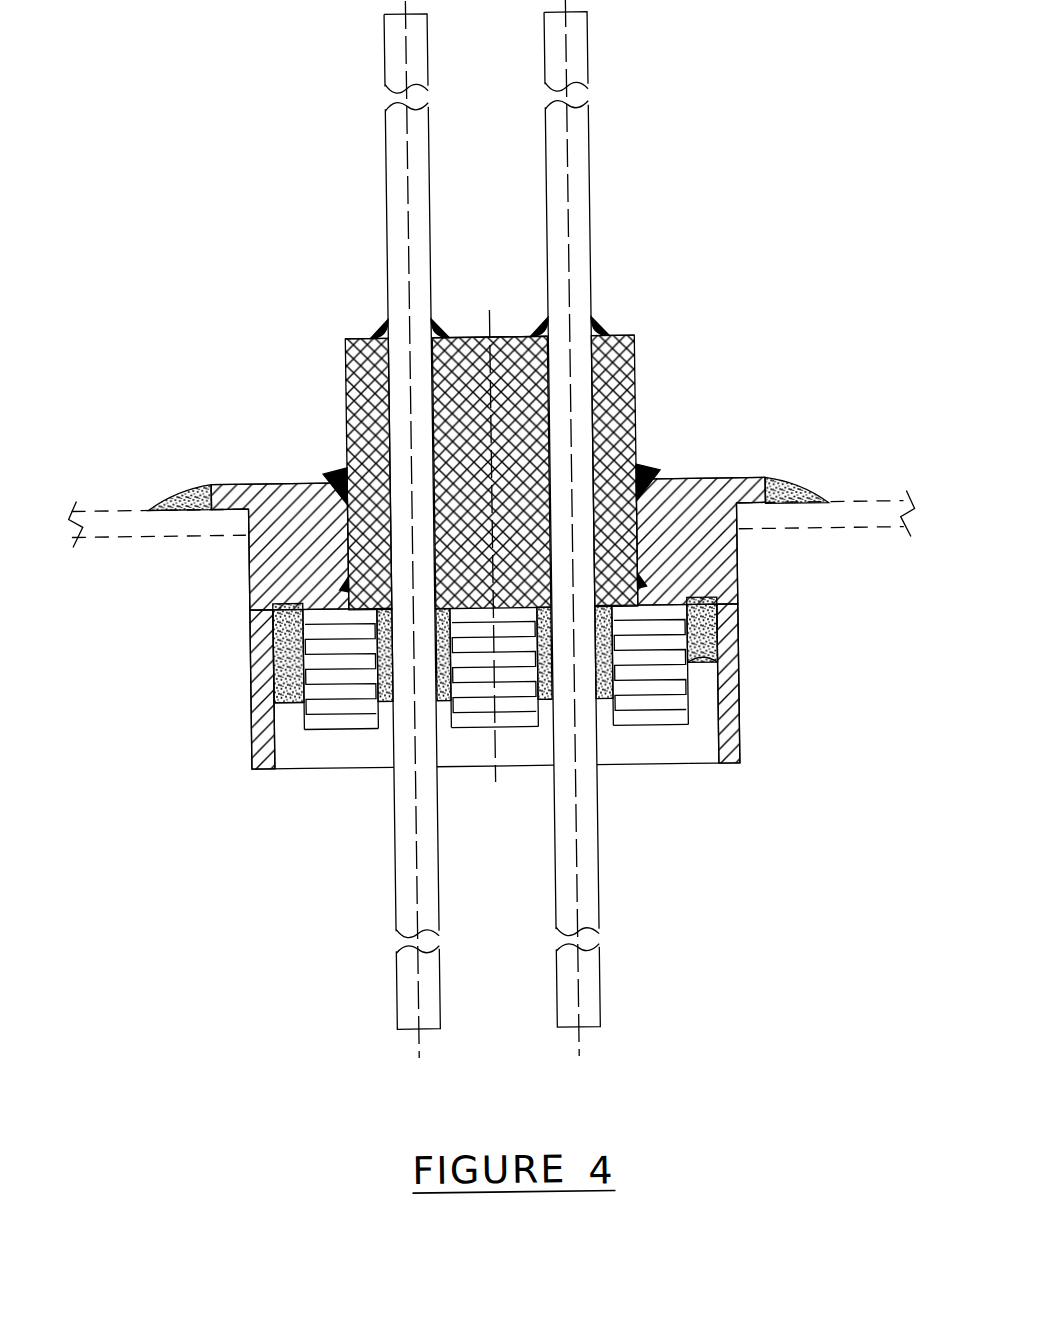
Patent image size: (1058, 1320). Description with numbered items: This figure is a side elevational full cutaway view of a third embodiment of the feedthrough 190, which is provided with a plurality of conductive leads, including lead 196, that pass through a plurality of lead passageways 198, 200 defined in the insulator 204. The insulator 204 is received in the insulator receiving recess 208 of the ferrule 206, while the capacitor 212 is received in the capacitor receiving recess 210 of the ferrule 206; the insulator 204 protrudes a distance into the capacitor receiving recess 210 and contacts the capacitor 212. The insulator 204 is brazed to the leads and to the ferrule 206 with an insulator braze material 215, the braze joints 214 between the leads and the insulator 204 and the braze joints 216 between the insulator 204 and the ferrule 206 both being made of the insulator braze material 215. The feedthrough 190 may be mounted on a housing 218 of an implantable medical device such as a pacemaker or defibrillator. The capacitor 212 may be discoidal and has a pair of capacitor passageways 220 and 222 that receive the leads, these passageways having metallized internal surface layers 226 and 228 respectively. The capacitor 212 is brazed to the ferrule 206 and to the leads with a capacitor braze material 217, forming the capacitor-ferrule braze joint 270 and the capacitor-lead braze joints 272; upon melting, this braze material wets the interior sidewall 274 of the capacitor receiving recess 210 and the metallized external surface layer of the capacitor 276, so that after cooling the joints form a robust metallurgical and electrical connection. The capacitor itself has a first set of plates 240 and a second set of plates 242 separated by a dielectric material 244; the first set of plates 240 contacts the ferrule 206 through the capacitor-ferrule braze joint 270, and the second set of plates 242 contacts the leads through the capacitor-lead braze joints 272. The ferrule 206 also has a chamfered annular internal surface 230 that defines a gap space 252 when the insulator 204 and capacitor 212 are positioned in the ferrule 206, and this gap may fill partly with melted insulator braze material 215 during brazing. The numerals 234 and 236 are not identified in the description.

The feedthrough 190 is at (772, 94).
The conductive lead 196 is at (589, 129).
The lead passageway 198 is at (371, 388).
The lead passageway 200 is at (643, 384).
The insulator 204 is at (636, 414).
The braze joint 214 is at (382, 320).
The insulator braze material 215 is at (389, 331).
The braze joint 216 is at (347, 468).
The housing 218 is at (134, 513).
The ferrule 206 is at (258, 589).
The insulator receiving recess 208 is at (337, 493).
The chamfered annular internal surface 230 is at (269, 572).
The capacitor receiving recess 210 is at (250, 765).
The capacitor 212 is at (274, 717).
The inner wall surface 234 is at (291, 665).
The gap space 252 is at (285, 607).
The outer seal ring 236 is at (290, 627).
The first set of plates 240 is at (280, 740).
The capacitor-ferrule braze joint 270 is at (303, 641).
The capacitor braze material 217 is at (299, 687).
The capacitor-lead braze joint 272 is at (390, 744).
The capacitor passageway 220 is at (342, 726).
The capacitor passageway 222 is at (627, 732).
The second set of plates 242 is at (351, 710).
The metallized internal surface layer 226 is at (379, 704).
The metallized internal surface layer 228 is at (591, 723).
The interior sidewall 274 is at (283, 765).
The dielectric material 244 is at (298, 767).
The metallized external surface layer of the capacitor 276 is at (743, 761).